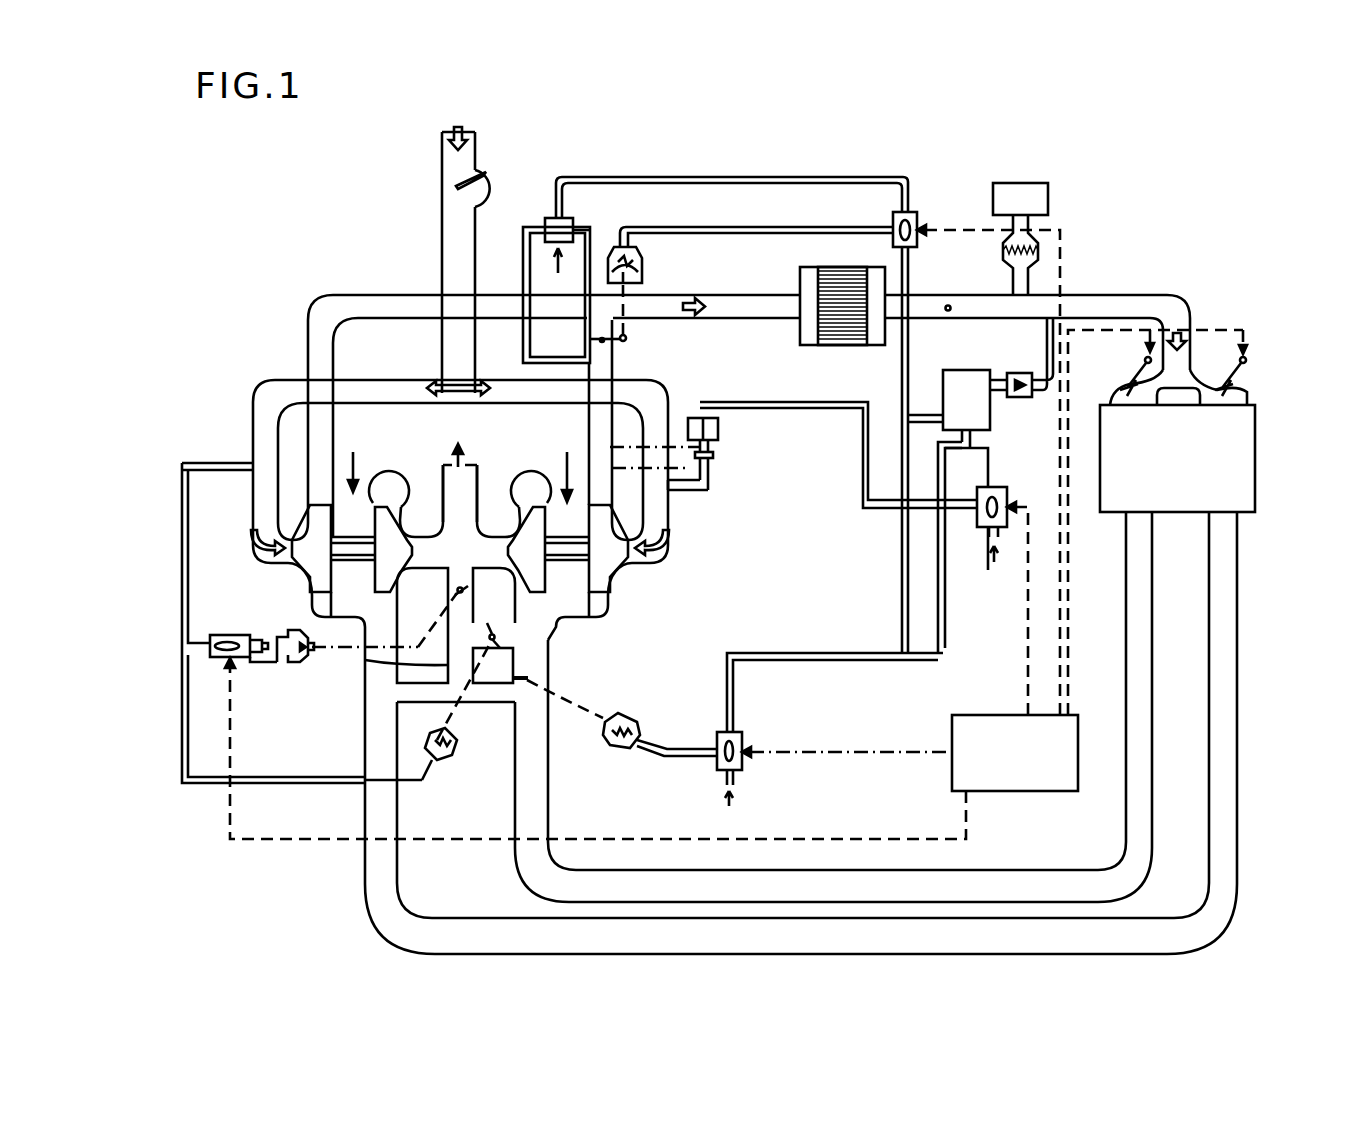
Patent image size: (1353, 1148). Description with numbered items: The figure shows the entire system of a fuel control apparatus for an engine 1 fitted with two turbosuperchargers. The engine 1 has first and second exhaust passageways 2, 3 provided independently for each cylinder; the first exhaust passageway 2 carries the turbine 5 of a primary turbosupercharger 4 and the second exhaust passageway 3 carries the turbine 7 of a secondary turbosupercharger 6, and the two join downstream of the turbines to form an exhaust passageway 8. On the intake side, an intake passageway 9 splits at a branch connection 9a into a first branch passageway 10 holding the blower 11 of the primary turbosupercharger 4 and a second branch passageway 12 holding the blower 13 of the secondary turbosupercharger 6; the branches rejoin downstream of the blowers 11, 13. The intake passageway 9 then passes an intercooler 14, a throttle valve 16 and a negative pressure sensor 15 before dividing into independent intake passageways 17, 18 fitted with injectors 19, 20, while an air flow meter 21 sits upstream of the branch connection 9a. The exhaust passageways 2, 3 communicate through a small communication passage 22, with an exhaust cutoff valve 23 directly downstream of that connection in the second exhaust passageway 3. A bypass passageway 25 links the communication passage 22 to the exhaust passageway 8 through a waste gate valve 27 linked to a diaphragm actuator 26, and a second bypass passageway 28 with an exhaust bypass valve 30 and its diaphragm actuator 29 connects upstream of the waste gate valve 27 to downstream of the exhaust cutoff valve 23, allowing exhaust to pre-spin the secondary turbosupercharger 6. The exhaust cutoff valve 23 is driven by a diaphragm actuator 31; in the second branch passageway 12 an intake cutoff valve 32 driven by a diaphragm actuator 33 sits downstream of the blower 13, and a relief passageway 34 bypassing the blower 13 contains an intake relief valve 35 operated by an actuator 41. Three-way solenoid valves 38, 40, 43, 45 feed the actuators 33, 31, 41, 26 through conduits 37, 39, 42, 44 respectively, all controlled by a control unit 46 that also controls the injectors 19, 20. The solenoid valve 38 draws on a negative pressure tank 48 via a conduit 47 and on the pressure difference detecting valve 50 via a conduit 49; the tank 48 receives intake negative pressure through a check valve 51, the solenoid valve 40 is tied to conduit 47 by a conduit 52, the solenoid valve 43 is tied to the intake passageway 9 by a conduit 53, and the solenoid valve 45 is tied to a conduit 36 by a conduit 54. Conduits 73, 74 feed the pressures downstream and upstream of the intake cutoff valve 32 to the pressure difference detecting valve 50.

The engine 1 is at (1256, 462).
The first exhaust passageway 2 is at (1237, 688).
The second exhaust passageway 3 is at (1152, 630).
The primary turbosupercharger 4 is at (356, 450).
The turbine 5 is at (388, 473).
The secondary turbosupercharger 6 is at (564, 455).
The turbine 7 is at (532, 473).
The exhaust passageway 8 is at (462, 460).
The intake passageway 9 is at (442, 217).
The branch connection 9a is at (437, 375).
The first branch passageway 10 is at (283, 378).
The blower 11 is at (300, 600).
The second branch passageway 12 is at (673, 400).
The blower 13 is at (600, 610).
The intercooler 14 is at (800, 340).
The negative pressure sensor 15 is at (1048, 190).
The throttle valve 16 is at (948, 306).
The independent intake passageway 17 is at (1207, 372).
The independent intake passageway 18 is at (1110, 382).
The injector 19 is at (1248, 372).
The injector 20 is at (1138, 368).
The air flow meter 21 is at (483, 178).
The communication passage 22 is at (490, 703).
The exhaust cutoff valve 23 is at (560, 697).
The bypass passageway 25 is at (365, 660).
The diaphragm actuator 26 is at (300, 665).
The waste gate valve 27 is at (468, 583).
The second bypass passageway 28 is at (492, 623).
The diaphragm actuator 29 is at (452, 765).
The exhaust bypass valve 30 is at (500, 640).
The diaphragm actuator 31 is at (620, 748).
The intake cutoff valve 32 is at (600, 340).
The diaphragm actuator 33 is at (645, 268).
The relief passageway 34 is at (710, 487).
The intake relief valve 35 is at (715, 455).
The conduit 36 is at (182, 760).
The conduit 37 is at (838, 227).
The three-way solenoid valve 38 is at (920, 225).
The conduit 39 is at (677, 756).
The three-way solenoid valve 40 is at (745, 742).
The actuator 41 is at (720, 425).
The conduit 42 is at (866, 510).
The three-way solenoid valve 43 is at (1007, 530).
The conduit 44 is at (257, 663).
The three-way solenoid valve 45 is at (233, 653).
The control unit 46 is at (1005, 791).
The conduit 47 is at (902, 375).
The negative pressure tank 48 is at (990, 425).
The conduit 49 is at (737, 177).
The pressure difference detecting valve 50 is at (552, 218).
The check valve 51 is at (1022, 397).
The conduit 52 is at (855, 653).
The conduit 53 is at (953, 513).
The conduit 54 is at (210, 652).
The conduit 73 is at (595, 215).
The conduit 74 is at (520, 260).